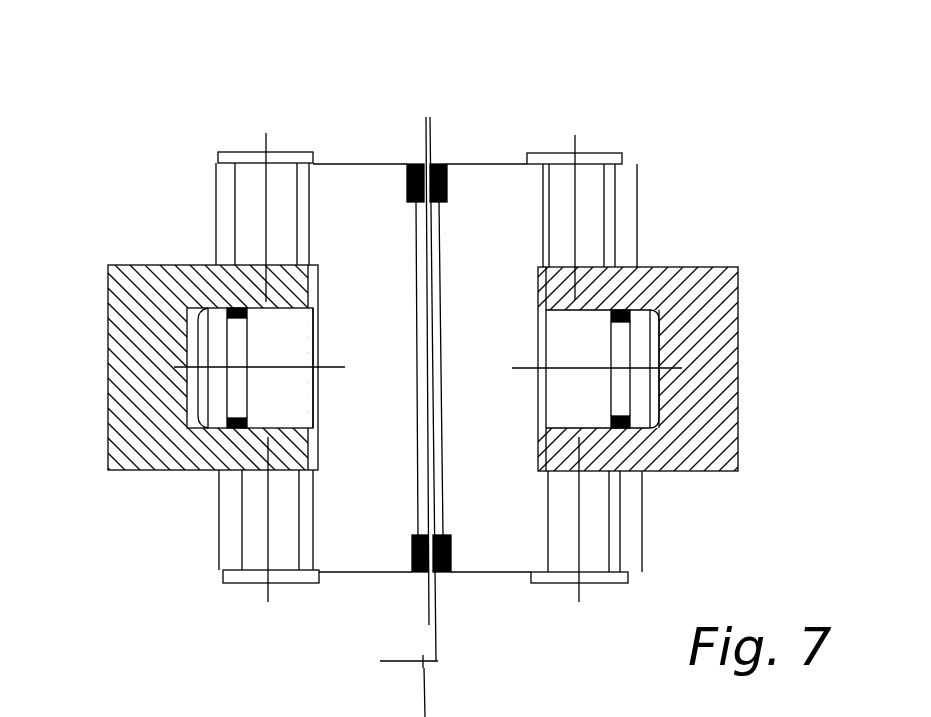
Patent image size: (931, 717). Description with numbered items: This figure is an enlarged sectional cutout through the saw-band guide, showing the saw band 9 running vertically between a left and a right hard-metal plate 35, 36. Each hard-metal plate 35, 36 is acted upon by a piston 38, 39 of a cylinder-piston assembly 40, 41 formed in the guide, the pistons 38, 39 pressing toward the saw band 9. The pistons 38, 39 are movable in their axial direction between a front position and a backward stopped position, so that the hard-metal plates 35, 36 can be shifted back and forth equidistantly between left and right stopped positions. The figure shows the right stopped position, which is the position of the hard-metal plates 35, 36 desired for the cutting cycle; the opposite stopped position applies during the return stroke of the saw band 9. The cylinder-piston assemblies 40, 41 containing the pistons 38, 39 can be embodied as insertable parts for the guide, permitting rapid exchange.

The saw band 9 is at (427, 118).
The hard-metal plate 35 is at (355, 183).
The hard-metal plate 36 is at (503, 198).
The piston 38 is at (292, 332).
The piston 39 is at (582, 331).
The cylinder-piston assembly 40 is at (156, 442).
The cylinder-piston assembly 41 is at (699, 447).